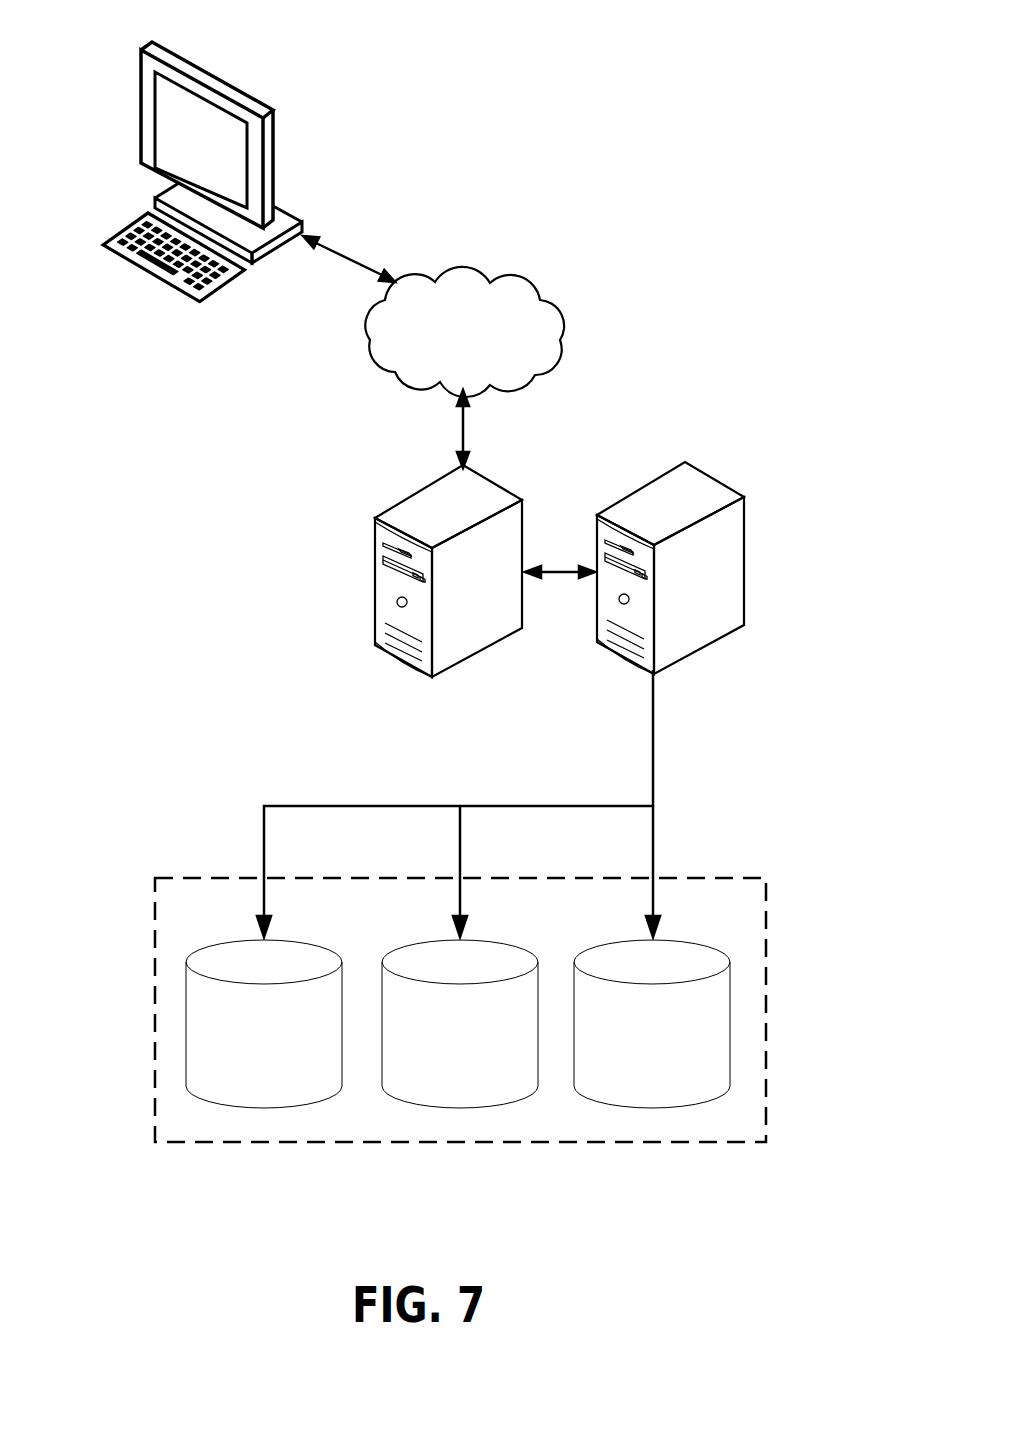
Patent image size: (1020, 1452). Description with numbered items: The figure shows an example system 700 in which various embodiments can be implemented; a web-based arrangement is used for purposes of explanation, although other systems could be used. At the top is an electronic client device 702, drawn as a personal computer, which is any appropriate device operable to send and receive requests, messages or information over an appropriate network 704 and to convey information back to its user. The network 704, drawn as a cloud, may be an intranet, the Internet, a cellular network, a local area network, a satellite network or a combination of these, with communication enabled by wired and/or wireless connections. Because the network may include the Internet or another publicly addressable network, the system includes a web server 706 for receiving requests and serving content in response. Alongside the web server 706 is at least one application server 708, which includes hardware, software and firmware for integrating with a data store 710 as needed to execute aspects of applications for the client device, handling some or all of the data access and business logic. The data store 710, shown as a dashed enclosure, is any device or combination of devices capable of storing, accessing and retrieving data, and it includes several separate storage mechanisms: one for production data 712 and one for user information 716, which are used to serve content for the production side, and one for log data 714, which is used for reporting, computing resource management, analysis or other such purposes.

The system 700 is at (709, 308).
The electronic client device 702 is at (223, 83).
The network 704 is at (499, 284).
The web server 706 is at (377, 567).
The application server 708 is at (621, 664).
The data store 710 is at (190, 1142).
The production data 712 is at (265, 1106).
The log data 714 is at (460, 1105).
The user information 716 is at (652, 1105).